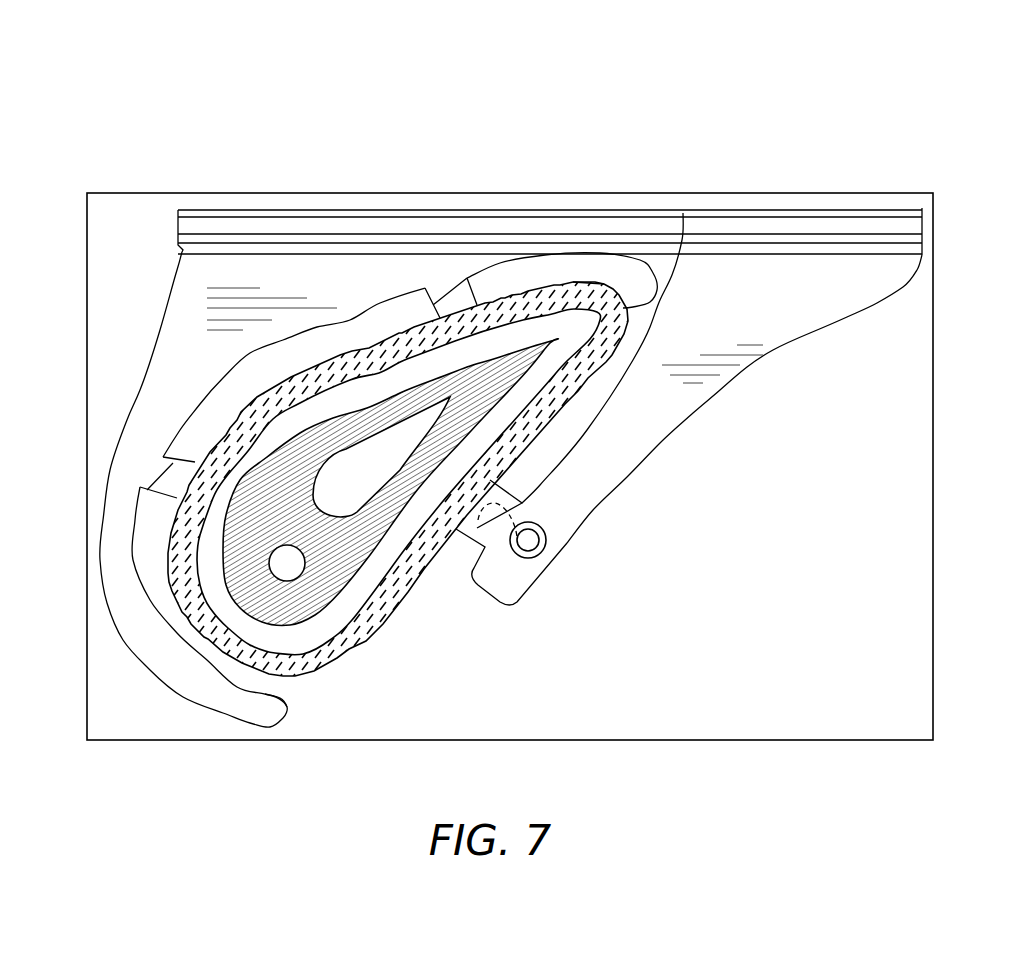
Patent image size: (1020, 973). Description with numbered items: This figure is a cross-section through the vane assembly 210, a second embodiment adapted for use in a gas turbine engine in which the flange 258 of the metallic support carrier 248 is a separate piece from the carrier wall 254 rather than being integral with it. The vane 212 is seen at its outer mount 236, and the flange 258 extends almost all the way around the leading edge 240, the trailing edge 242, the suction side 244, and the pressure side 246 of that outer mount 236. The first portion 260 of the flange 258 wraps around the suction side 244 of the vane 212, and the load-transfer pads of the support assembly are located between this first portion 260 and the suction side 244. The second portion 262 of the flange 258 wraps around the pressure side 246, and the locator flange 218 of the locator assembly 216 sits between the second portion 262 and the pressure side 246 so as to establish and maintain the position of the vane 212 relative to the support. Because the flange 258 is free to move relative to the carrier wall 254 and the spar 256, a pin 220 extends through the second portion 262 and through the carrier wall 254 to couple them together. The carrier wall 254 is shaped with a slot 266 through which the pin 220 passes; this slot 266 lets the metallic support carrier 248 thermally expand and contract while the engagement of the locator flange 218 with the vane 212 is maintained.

The vane assembly 210 is at (213, 128).
The vane 212 is at (605, 283).
The locator assembly 216 is at (505, 655).
The locator flange 218 is at (458, 542).
The pin 220 is at (560, 548).
The outer mount 236 is at (574, 283).
The leading edge 240 is at (253, 677).
The trailing edge 242 is at (683, 213).
The suction side 244 is at (233, 412).
The pressure side 246 is at (393, 612).
The metallic support carrier 248 is at (82, 393).
The carrier wall 254 is at (512, 231).
The spar 256 is at (345, 410).
The flange 258 is at (127, 338).
The first portion 260 is at (117, 433).
The second portion 262 is at (670, 447).
The slot 266 is at (530, 515).